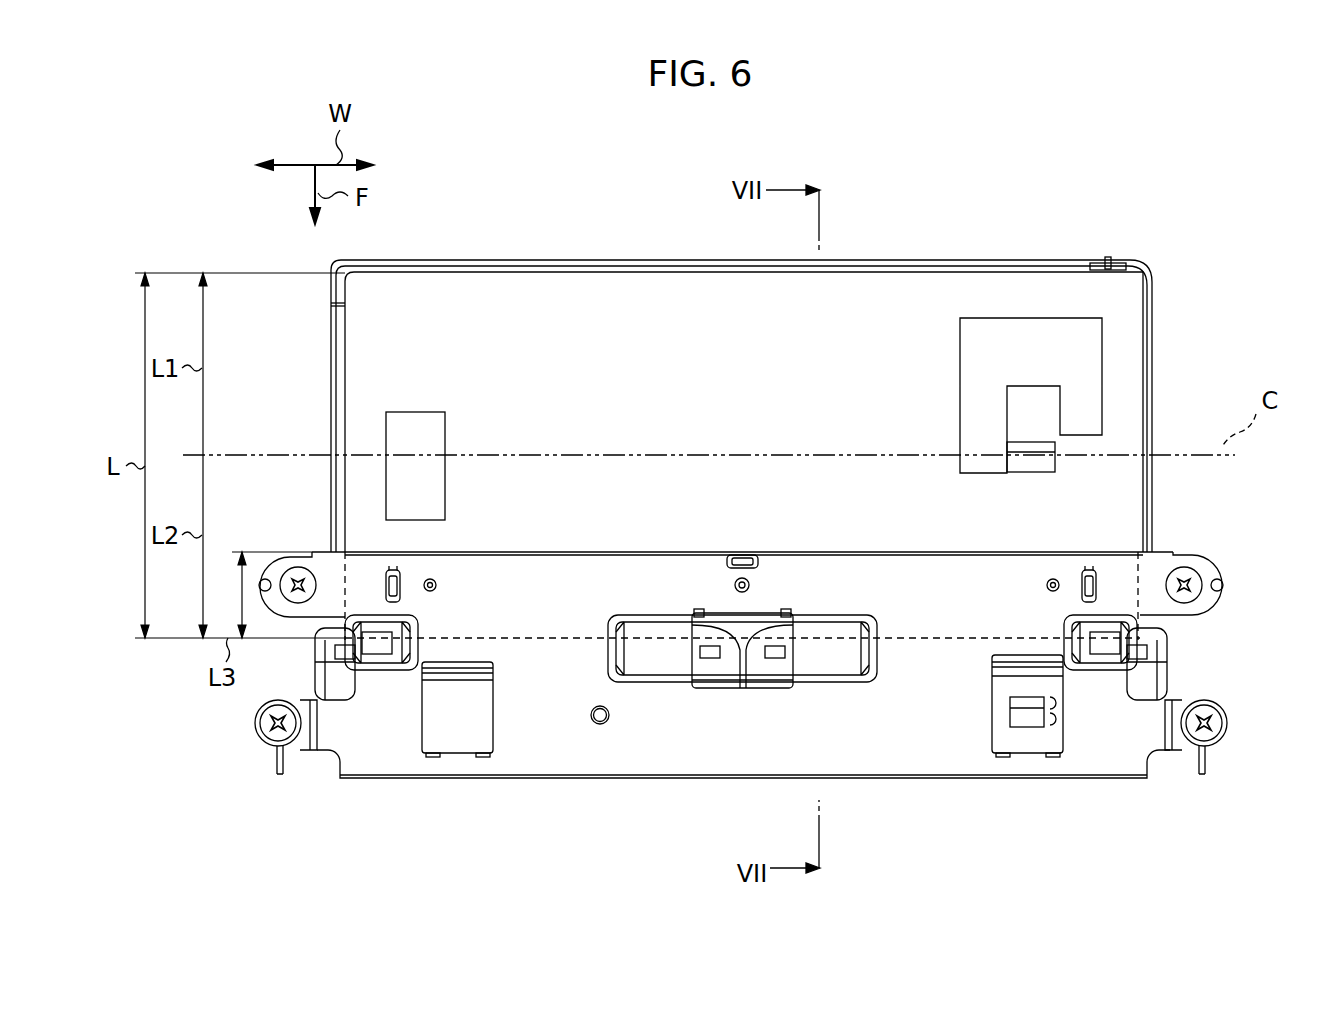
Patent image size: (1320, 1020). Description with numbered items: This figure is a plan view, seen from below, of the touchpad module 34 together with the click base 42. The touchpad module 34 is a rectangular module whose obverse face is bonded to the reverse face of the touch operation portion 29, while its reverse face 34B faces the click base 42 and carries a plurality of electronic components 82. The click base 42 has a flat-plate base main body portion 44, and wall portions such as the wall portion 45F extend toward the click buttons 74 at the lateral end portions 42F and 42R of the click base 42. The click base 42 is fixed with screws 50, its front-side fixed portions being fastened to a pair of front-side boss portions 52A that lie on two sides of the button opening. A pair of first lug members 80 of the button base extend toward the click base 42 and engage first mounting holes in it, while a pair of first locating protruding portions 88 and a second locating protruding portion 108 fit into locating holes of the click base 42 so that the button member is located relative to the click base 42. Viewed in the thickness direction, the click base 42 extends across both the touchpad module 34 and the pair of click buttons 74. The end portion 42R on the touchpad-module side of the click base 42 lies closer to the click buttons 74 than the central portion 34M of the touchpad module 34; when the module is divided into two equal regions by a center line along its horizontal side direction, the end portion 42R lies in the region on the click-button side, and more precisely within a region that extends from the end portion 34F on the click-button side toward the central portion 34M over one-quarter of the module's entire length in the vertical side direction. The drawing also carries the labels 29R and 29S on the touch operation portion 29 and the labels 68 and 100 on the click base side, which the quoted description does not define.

The touch operation portion 29 is at (741, 372).
The frame rear portion 29R is at (867, 262).
The frame side portion 29S is at (333, 393).
The touchpad module 34 is at (744, 466).
The reverse face 34B is at (597, 293).
The end portion 34F is at (563, 640).
The central portion 34M is at (355, 452).
The click base 42 is at (741, 669).
The end portion 42F is at (798, 760).
The end portion 42R is at (802, 556).
The base main body portion 44 is at (682, 755).
The wall portion 45F is at (858, 550).
The screw 50 is at (283, 575).
The front-side boss portions 52A is at (246, 727).
The hole 68 is at (606, 746).
The click button 74 is at (327, 686).
The first lug members 80 is at (380, 583).
The electronic components 82 is at (413, 430).
The first locating protruding portions 88 is at (436, 585).
The connector 100 is at (742, 552).
The second locating protruding portion 108 is at (752, 585).